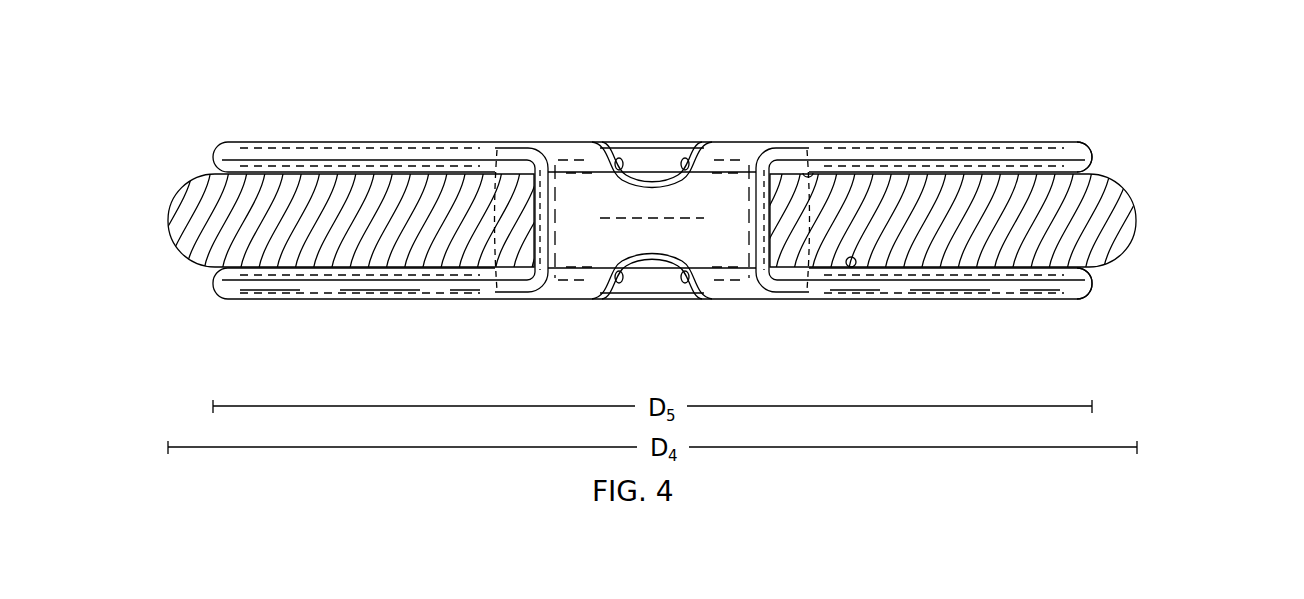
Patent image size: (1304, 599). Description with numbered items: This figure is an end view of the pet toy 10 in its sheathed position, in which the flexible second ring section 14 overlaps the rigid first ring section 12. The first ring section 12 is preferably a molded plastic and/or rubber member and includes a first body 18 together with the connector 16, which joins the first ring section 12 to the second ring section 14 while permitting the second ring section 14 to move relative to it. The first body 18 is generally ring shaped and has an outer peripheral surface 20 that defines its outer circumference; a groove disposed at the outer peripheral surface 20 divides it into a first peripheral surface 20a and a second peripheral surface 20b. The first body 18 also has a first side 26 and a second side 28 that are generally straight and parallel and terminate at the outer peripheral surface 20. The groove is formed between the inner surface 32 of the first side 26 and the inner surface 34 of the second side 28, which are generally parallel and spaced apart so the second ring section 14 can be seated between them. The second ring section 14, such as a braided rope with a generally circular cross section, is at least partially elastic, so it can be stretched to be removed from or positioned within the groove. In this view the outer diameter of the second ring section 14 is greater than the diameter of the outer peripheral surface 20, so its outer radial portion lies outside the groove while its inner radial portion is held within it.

The pet toy 10 is at (1183, 98).
The first ring section 12 is at (288, 302).
The second ring section 14 is at (177, 253).
The connector 16 is at (558, 287).
The first body 18 is at (905, 292).
The outer peripheral surface 20 is at (1218, 165).
The first peripheral surface 20a is at (1094, 284).
The second peripheral surface 20b is at (1094, 157).
The first side 26 is at (963, 300).
The second side 28 is at (862, 141).
The inner surface of the first side 32 is at (848, 267).
The inner surface of the second side 34 is at (808, 172).